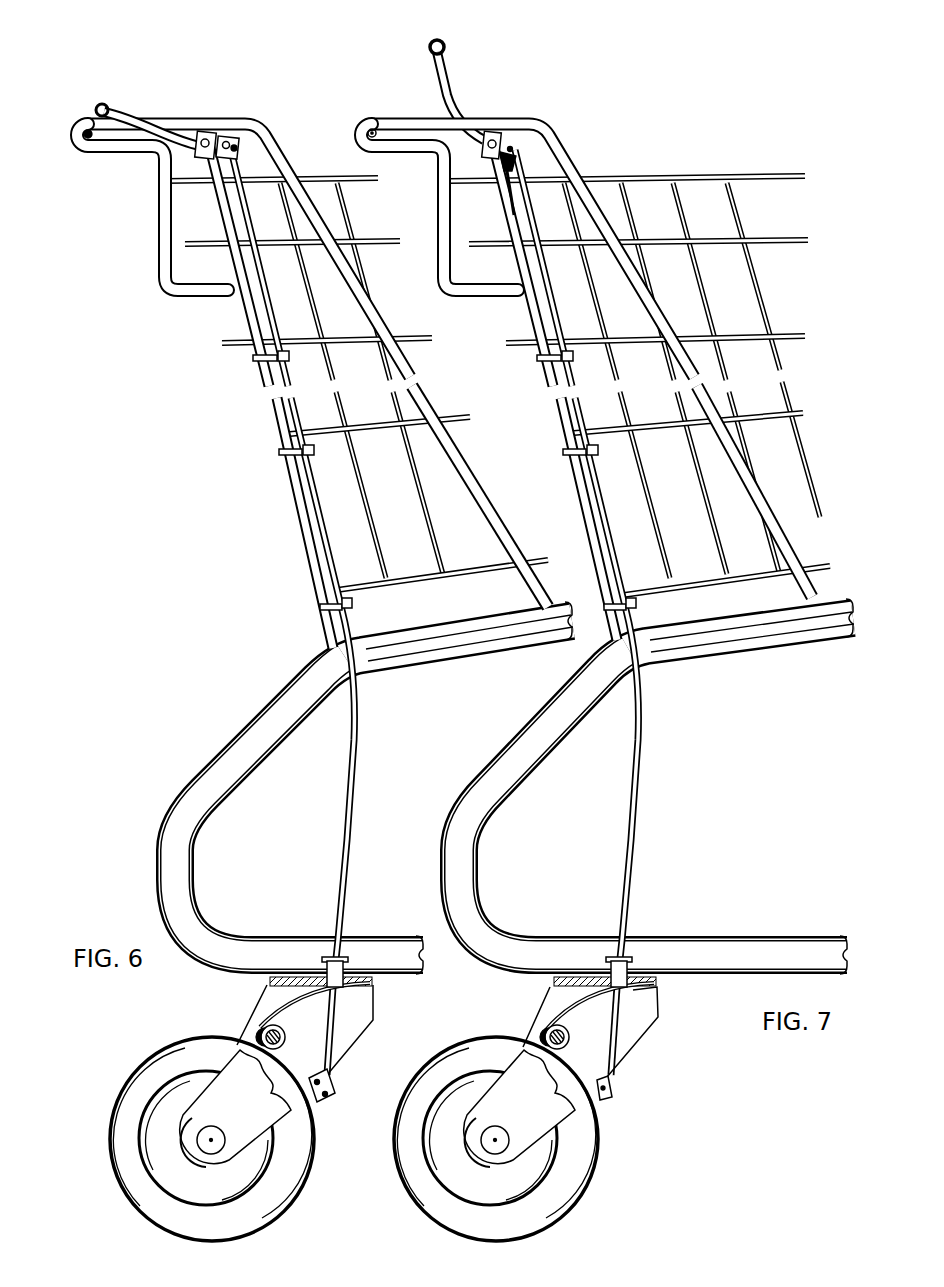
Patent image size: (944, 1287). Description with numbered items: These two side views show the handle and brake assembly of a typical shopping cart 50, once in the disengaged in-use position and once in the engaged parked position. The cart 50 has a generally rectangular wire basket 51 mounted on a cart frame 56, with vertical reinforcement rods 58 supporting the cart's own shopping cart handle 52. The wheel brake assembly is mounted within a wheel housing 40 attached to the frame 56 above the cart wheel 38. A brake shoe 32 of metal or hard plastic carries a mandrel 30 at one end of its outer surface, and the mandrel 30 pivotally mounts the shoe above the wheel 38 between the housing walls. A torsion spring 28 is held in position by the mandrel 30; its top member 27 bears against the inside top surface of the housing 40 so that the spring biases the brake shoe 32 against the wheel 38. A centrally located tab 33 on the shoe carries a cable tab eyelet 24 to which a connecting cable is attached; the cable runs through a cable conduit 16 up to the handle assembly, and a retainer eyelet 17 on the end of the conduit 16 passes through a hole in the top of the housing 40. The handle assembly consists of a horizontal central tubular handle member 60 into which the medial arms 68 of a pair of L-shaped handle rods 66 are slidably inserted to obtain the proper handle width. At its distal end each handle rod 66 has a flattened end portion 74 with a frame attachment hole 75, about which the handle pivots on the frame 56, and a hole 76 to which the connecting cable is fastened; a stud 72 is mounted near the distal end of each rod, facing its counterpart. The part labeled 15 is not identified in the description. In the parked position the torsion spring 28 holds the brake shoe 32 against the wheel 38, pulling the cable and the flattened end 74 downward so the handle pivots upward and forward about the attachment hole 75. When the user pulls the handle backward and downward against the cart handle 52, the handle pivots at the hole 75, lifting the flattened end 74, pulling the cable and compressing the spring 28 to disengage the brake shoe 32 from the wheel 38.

In FIG. 6, the brake actuating tube 15 is at (218, 165).
In FIG. 7, the brake actuating tube 15 is at (657, 1040).
In FIG. 6, the cable conduit 16 is at (240, 221).
In FIG. 7, the cable conduit 16 is at (620, 568).
In FIG. 7, the retainer eyelet 17 is at (666, 927).
In FIG. 7, the cable tab eyelet 24 is at (633, 1089).
In FIG. 6, the torsion spring top member 27 is at (283, 1012).
In FIG. 7, the torsion spring top member 27 is at (567, 1004).
In FIG. 6, the torsion spring 28 is at (287, 1038).
In FIG. 7, the torsion spring 28 is at (489, 1029).
In FIG. 6, the mandrel 30 is at (263, 1033).
In FIG. 7, the mandrel 30 is at (507, 1023).
In FIG. 6, the brake shoe 32 is at (316, 1118).
In FIG. 7, the brake shoe 32 is at (537, 1139).
In FIG. 6, the tab 33 is at (330, 1081).
In FIG. 6, the cart wheel 38 is at (148, 1190).
In FIG. 7, the cart wheel 38 is at (534, 1151).
In FIG. 7, the wheel housing 40 is at (616, 1032).
In FIG. 7, the shopping cart 50 is at (800, 350).
In FIG. 7, the wire basket 51 is at (759, 377).
In FIG. 6, the shopping cart handle 52 is at (84, 122).
In FIG. 7, the shopping cart handle 52 is at (436, 158).
In FIG. 6, the cart frame 56 is at (262, 742).
In FIG. 6, the vertical reinforcement rod 58 is at (252, 345).
In FIG. 6, the central tubular handle member 60 is at (107, 106).
In FIG. 7, the central tubular handle member 60 is at (475, 30).
In FIG. 6, the handle rod 66 is at (140, 113).
In FIG. 7, the handle rod 66 is at (483, 93).
In FIG. 7, the medial arm 68 is at (533, 228).
In FIG. 6, the stud 72 is at (233, 142).
In FIG. 7, the stud 72 is at (563, 125).
In FIG. 7, the flattened end portion 74 is at (574, 132).
In FIG. 6, the frame attachment hole 75 is at (208, 138).
In FIG. 7, the frame attachment hole 75 is at (542, 103).
In FIG. 7, the cable attachment hole 76 is at (575, 177).